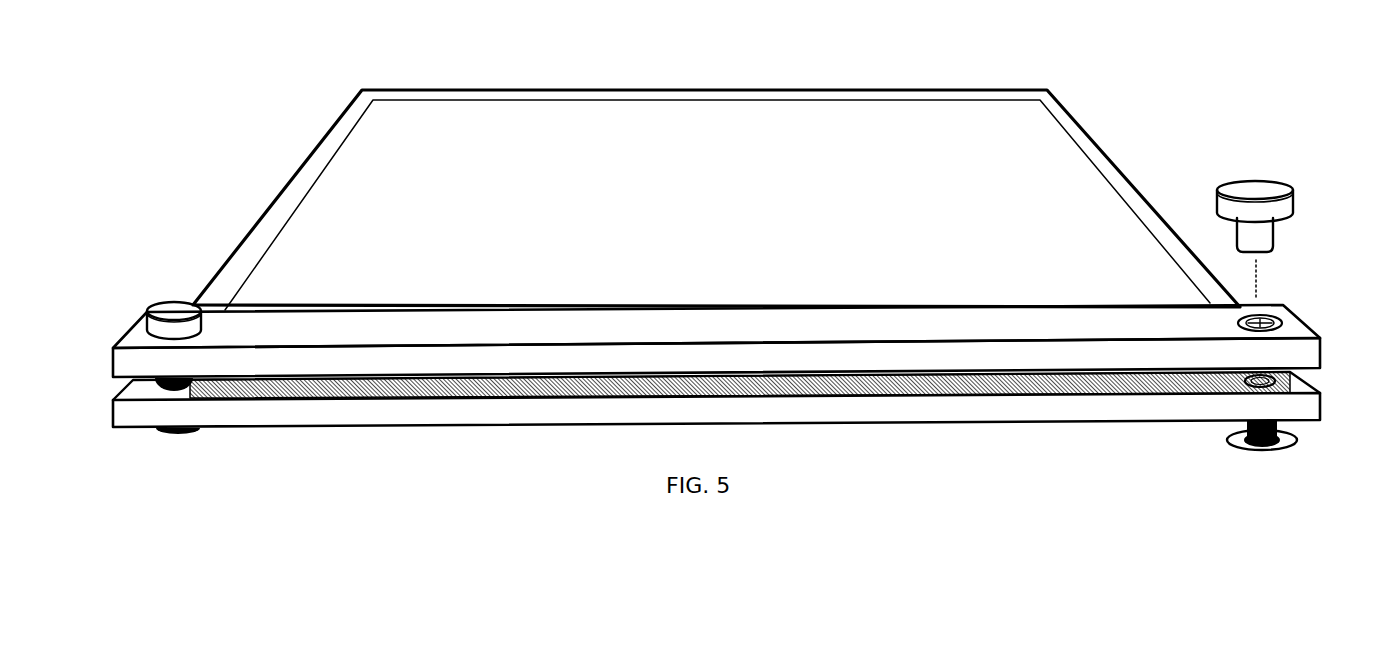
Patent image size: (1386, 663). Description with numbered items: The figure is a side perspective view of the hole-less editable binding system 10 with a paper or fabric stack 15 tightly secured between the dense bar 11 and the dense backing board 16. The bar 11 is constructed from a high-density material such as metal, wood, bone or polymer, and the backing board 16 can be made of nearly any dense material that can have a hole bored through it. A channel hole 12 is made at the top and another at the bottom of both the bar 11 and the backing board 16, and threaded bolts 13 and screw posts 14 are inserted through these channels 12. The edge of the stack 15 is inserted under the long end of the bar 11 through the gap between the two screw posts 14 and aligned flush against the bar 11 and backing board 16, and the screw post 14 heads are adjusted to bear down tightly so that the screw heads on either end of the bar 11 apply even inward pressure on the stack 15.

The hole-less editable binding system 10 is at (245, 81).
The dense bar 11 is at (113, 360).
The channel through hole entry points 12 is at (1279, 326).
The threaded male bolt or screw 13 is at (150, 303).
The threaded female screw post or socket 14 is at (186, 433).
The flat material such as paper, fabric or leather 15 is at (1100, 384).
The dense backing board 16 is at (113, 414).